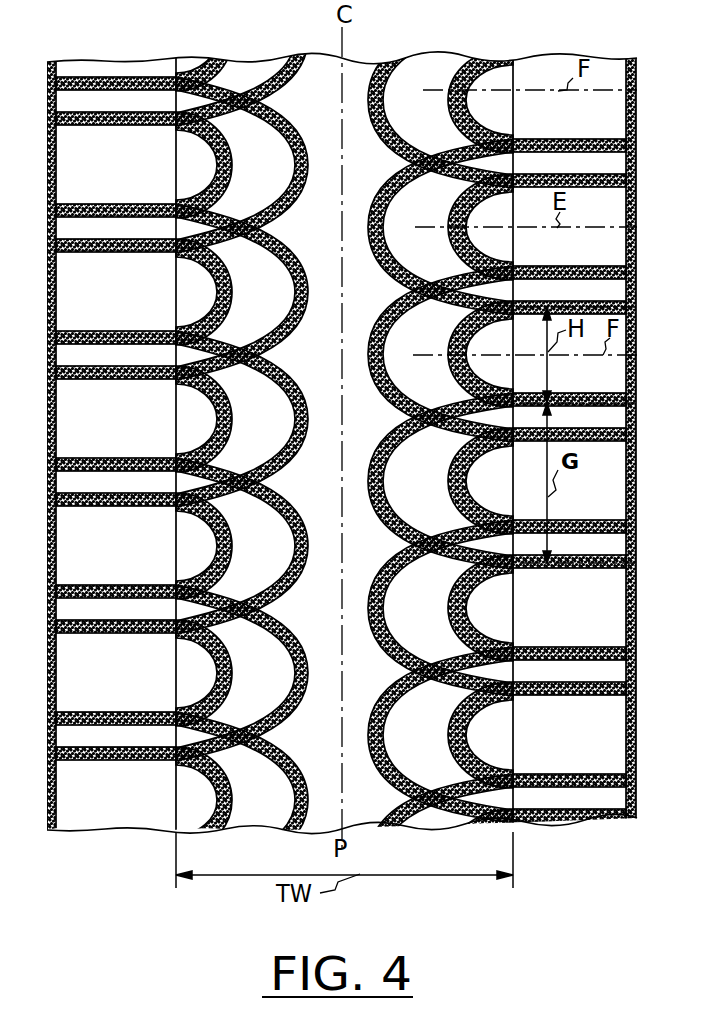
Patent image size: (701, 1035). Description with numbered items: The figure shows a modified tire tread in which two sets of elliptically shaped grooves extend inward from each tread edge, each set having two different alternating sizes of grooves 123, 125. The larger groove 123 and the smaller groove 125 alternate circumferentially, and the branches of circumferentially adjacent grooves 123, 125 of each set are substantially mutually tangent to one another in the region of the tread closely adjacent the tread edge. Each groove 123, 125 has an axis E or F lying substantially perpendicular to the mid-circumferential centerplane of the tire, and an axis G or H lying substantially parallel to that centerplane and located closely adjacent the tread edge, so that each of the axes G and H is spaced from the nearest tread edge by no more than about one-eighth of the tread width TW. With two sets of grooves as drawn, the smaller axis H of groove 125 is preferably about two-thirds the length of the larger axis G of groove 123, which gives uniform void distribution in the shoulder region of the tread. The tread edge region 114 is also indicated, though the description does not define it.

The longitudinal strand 114 is at (173, 835).
The groove 123 is at (370, 213).
The groove 125 is at (448, 97).